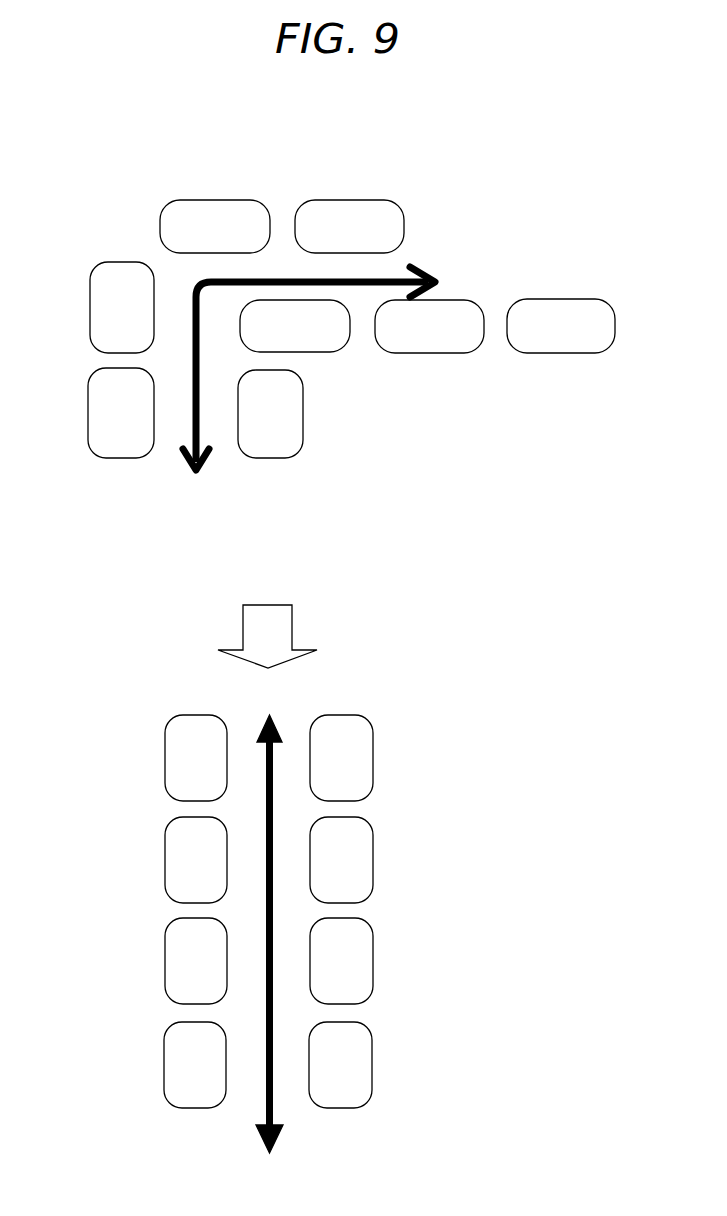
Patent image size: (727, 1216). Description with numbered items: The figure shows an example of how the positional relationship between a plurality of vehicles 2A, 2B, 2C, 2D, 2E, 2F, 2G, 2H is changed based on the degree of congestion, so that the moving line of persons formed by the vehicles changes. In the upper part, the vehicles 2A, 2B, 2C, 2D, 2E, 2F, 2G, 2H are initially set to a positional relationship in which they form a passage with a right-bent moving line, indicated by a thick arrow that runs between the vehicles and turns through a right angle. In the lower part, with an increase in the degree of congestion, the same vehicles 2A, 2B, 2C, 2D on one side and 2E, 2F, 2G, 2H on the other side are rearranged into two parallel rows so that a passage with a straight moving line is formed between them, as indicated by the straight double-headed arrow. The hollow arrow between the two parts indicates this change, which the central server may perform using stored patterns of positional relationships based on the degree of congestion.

The vehicle 2A is at (377, 199).
The vehicle 2B is at (240, 199).
The vehicle 2C is at (128, 262).
The vehicle 2D is at (90, 395).
The vehicle 2E is at (558, 353).
The vehicle 2F is at (415, 353).
The vehicle 2G is at (330, 352).
The vehicle 2H is at (303, 442).